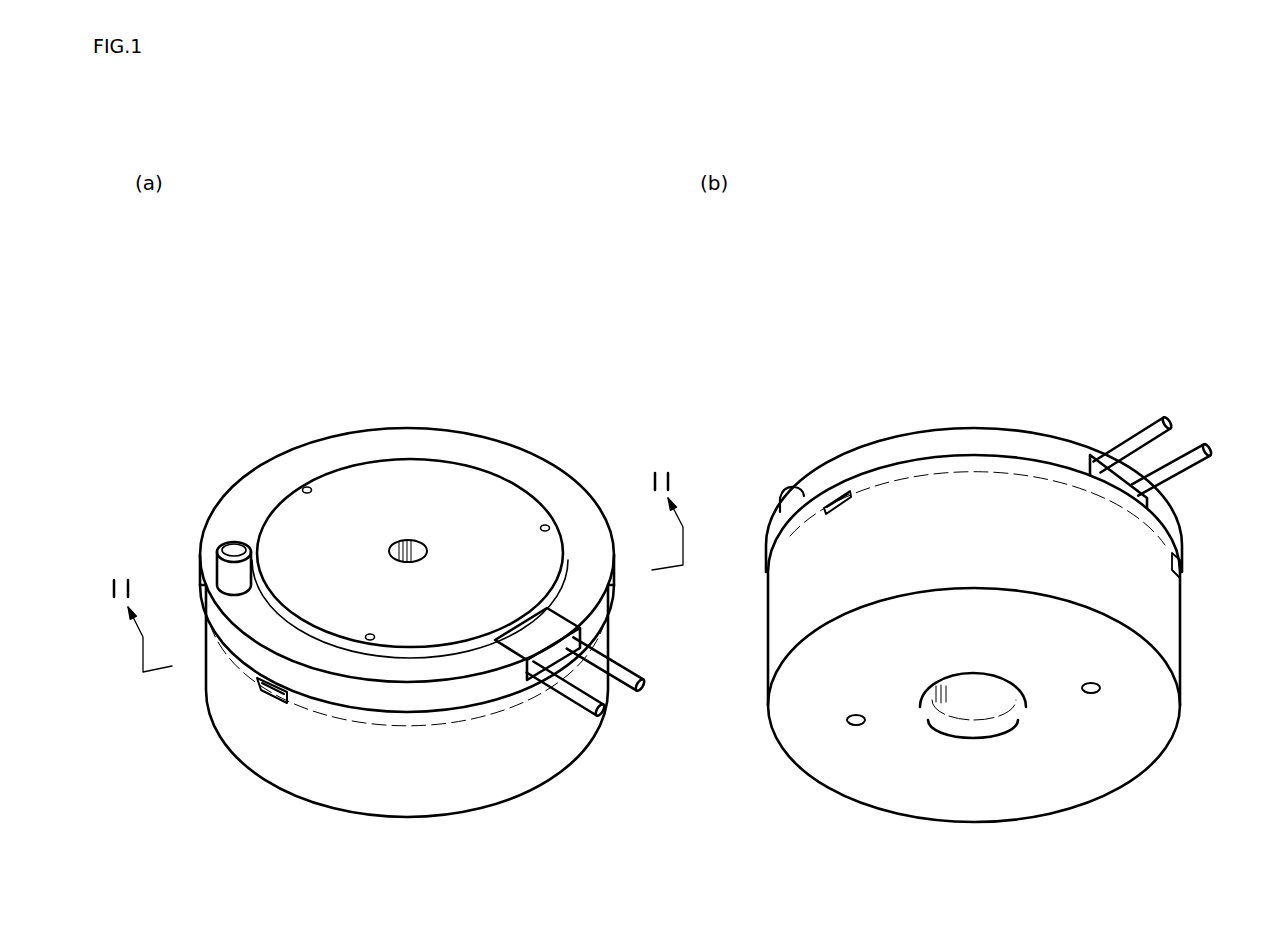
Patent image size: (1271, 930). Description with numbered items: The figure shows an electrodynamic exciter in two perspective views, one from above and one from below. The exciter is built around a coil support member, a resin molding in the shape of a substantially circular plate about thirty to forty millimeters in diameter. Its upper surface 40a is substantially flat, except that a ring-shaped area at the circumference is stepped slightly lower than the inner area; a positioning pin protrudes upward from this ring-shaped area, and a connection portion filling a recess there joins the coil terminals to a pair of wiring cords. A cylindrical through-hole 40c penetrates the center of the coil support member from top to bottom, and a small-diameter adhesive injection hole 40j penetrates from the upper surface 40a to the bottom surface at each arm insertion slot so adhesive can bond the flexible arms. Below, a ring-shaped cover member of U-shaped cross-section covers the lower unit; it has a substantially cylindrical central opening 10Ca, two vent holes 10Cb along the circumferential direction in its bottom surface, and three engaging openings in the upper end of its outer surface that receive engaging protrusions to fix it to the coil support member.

The opening 10Ca is at (980, 700).
The vent holes 10Cb is at (1090, 697).
The upper surface 40a is at (417, 480).
The through-hole 40c is at (409, 540).
The adhesive injection hole 40j is at (546, 522).